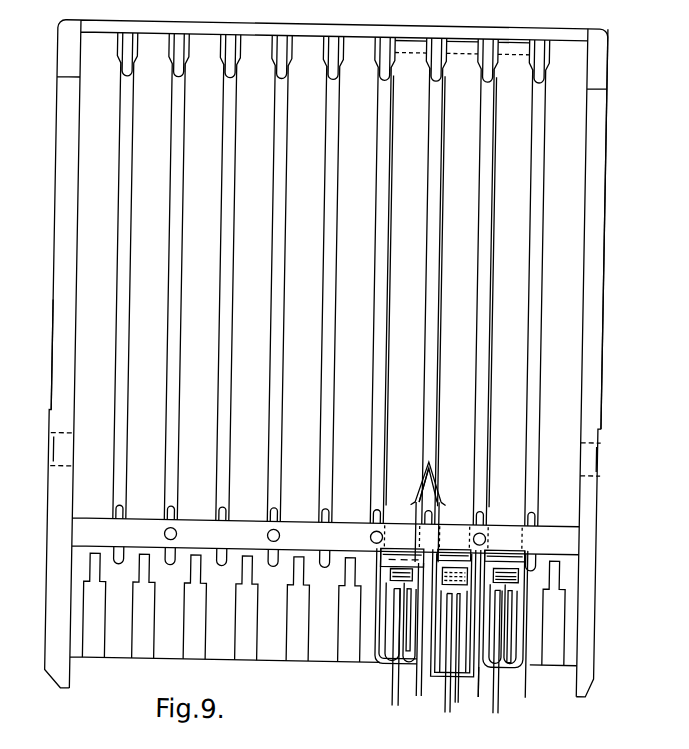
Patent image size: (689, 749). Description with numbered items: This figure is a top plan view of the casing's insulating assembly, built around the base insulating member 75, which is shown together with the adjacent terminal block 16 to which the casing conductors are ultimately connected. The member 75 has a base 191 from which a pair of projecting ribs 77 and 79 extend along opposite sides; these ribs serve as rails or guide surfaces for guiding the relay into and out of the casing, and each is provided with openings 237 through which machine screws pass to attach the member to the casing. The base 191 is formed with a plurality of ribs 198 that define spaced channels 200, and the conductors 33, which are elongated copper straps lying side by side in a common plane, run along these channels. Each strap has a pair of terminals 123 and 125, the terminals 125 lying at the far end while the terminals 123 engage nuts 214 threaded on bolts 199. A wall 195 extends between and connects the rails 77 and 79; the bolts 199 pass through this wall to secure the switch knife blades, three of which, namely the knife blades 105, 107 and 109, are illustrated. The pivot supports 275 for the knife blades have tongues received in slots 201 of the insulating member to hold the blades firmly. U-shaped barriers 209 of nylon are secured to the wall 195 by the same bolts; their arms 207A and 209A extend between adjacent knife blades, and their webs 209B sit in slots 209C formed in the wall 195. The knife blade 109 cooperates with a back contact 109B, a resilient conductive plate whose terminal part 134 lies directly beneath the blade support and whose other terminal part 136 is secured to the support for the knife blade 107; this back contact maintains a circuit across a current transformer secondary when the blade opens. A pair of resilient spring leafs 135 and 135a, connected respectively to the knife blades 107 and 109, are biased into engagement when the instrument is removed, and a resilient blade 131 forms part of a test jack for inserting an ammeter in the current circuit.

The terminal block 16 is at (606, 53).
The base 191 is at (581, 238).
The base insulating member 75 is at (613, 336).
The rib 79 is at (604, 388).
The rib 77 is at (61, 374).
The openings 237 is at (70, 450).
The ribs 198 is at (382, 307).
The conductors 33 is at (439, 422).
The channels 200 is at (386, 275).
The terminal 125 is at (401, 49).
The resilient spring leaf 135 is at (440, 465).
The resilient spring leaf 135a is at (433, 472).
The wall 195 is at (192, 516).
The slots 209C is at (202, 548).
The webs 209B is at (379, 545).
The slots 201 is at (262, 566).
The terminal 123 is at (417, 547).
The pivot supports 275 is at (389, 660).
The arm 207A is at (435, 691).
The bolts 199 is at (403, 570).
The nuts 214 is at (396, 560).
The terminal part 134 is at (394, 675).
The knife blade 109 is at (409, 701).
The back contact 109B is at (405, 609).
The U-shaped barriers 209 is at (395, 685).
The terminal part 136 is at (465, 578).
The knife blade 107 is at (465, 708).
The resilient blade 131 is at (474, 676).
The arm 209A is at (489, 701).
The knife blade 105 is at (522, 704).